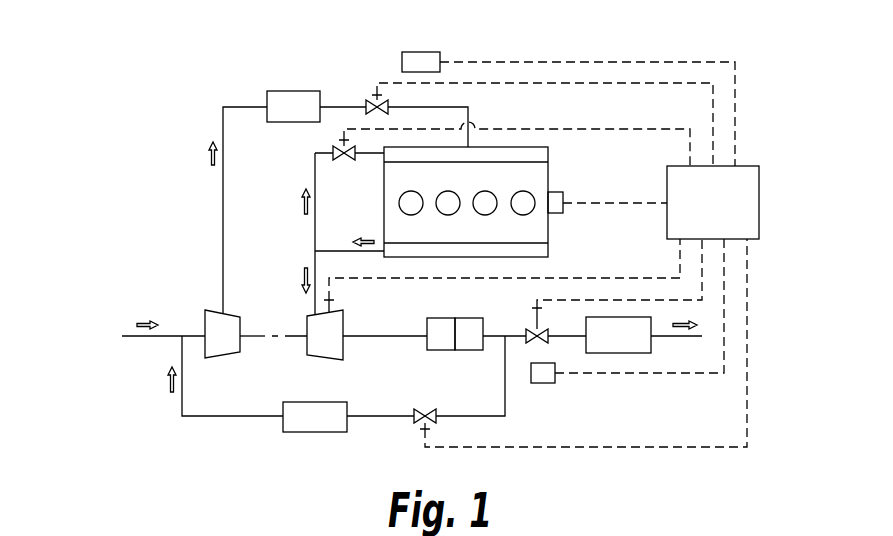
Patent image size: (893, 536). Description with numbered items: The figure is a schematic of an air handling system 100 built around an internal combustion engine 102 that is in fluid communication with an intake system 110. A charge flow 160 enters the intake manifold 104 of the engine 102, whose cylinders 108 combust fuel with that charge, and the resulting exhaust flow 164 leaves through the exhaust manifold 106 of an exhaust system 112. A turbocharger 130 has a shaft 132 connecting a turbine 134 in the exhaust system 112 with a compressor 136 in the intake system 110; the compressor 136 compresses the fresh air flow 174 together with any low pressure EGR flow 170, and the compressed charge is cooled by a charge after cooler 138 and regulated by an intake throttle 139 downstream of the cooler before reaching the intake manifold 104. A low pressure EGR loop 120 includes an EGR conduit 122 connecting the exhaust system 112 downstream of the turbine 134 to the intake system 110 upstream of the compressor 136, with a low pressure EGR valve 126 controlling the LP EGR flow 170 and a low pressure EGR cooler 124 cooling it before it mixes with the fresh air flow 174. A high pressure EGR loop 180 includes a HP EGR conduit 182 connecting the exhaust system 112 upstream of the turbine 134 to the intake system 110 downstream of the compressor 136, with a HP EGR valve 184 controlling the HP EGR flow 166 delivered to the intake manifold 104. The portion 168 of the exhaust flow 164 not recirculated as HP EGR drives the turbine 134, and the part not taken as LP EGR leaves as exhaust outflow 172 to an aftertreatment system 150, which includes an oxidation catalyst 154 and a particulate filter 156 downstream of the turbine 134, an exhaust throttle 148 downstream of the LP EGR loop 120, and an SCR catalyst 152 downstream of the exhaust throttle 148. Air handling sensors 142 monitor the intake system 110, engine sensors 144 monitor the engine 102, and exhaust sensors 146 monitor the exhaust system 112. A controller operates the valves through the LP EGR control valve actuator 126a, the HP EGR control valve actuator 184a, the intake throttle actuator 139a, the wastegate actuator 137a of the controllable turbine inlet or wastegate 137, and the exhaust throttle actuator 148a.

The air handling system 100 is at (114, 171).
The internal combustion engine 102 is at (552, 173).
The intake manifold 104 is at (525, 150).
The exhaust manifold 106 is at (537, 248).
The cylinders 108 is at (514, 193).
The intake system 110 is at (238, 104).
The exhaust system 112 is at (367, 340).
The low pressure EGR loop 120 is at (224, 422).
The low pressure EGR conduit 122 is at (508, 407).
The low pressure EGR cooler 124 is at (305, 433).
The low pressure EGR valve 126 is at (427, 410).
The low pressure EGR control valve actuator 126a is at (428, 430).
The turbocharger 130 is at (277, 345).
The shaft 132 is at (260, 334).
The turbine 134 is at (328, 356).
The compressor 136 is at (210, 318).
The wastegate 137 is at (332, 313).
The wastegate actuator 137a is at (333, 298).
The charge after cooler 138 is at (290, 90).
The intake throttle 139 is at (367, 103).
The intake throttle actuator 139a is at (377, 92).
The air handling sensors 142 is at (432, 51).
The engine sensors 144 is at (560, 213).
The exhaust sensors 146 is at (548, 384).
The exhaust throttle 148 is at (546, 333).
The exhaust throttle actuator 148a is at (535, 305).
The aftertreatment system 150 is at (640, 357).
The SCR catalyst 152 is at (604, 349).
The oxidation catalyst 154 is at (441, 318).
The particulate filter 156 is at (473, 346).
The charge flow 160 is at (208, 156).
The exhaust flow 164 is at (367, 239).
The high pressure EGR flow 166 is at (303, 206).
The portion of exhaust flow 168 is at (302, 278).
The low pressure EGR flow 170 is at (168, 380).
The exhaust outflow 172 is at (689, 322).
The fresh air flow 174 is at (142, 320).
The high pressure EGR loop 180 is at (310, 166).
The high pressure EGR conduit 182 is at (314, 178).
The high pressure EGR valve 184 is at (348, 160).
The high pressure EGR control valve actuator 184a is at (337, 142).